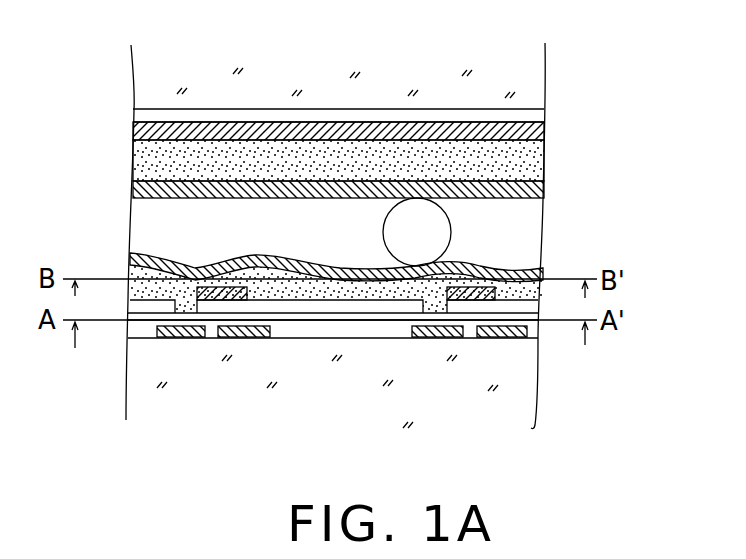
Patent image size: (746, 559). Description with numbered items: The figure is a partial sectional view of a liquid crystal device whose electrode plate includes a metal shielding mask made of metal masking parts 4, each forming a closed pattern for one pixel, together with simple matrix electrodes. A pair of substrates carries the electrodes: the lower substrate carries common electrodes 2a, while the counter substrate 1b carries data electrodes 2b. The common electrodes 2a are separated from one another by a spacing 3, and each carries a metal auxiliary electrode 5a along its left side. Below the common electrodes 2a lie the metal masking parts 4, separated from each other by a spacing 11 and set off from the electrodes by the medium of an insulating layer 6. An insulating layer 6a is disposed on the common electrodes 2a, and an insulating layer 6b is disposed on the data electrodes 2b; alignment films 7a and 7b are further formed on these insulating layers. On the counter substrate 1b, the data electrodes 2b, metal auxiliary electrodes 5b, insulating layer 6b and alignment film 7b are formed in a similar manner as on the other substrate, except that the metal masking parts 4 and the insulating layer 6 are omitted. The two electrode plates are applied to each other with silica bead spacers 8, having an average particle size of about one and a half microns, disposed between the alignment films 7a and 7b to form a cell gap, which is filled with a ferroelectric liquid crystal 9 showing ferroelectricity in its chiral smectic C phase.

The counter substrate 1b is at (531, 62).
The data electrodes 2b is at (540, 118).
The metal auxiliary electrodes 5b is at (543, 133).
The insulating layer 6b is at (527, 165).
The alignment film 7b is at (540, 190).
The ferroelectric liquid crystal 9 is at (533, 208).
The spacer 8 is at (437, 230).
The alignment film 7a is at (540, 272).
The insulating layer 6a is at (543, 292).
The insulating layer 6 is at (497, 300).
The spacing 3 is at (425, 303).
The metal auxiliary electrode 5a is at (482, 305).
The common electrodes 2a is at (540, 316).
The metal masking parts 4 is at (433, 338).
The spacing 11 is at (465, 325).